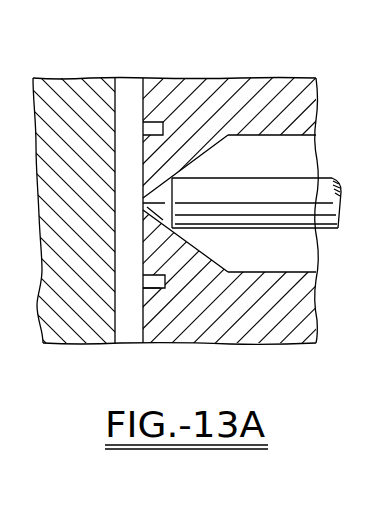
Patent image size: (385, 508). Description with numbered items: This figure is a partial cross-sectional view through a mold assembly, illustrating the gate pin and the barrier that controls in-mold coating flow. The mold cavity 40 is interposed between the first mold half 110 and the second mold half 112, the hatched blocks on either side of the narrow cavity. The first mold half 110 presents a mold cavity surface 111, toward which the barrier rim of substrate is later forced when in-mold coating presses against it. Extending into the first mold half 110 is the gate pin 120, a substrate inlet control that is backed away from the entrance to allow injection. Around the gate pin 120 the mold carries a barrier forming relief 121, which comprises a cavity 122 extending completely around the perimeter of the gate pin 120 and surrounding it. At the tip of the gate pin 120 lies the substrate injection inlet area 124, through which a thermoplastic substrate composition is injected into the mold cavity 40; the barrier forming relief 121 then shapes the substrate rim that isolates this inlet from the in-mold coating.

The mold cavity 40 is at (128, 90).
The first mold half 110 is at (262, 78).
The mold cavity surface 111 is at (153, 125).
The second mold half 112 is at (82, 345).
The gate pin 120 is at (268, 178).
The barrier forming relief 121 is at (153, 287).
The cavity 122 is at (168, 283).
The substrate injection inlet area 124 is at (143, 206).